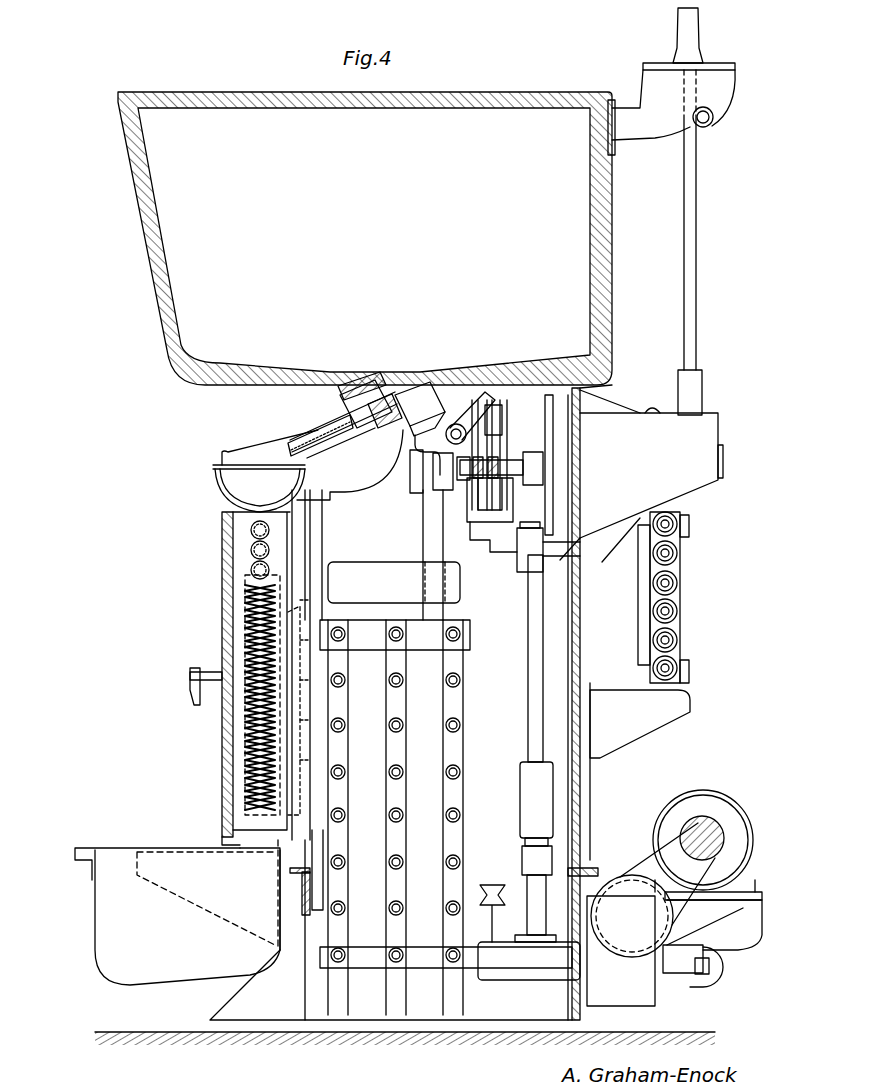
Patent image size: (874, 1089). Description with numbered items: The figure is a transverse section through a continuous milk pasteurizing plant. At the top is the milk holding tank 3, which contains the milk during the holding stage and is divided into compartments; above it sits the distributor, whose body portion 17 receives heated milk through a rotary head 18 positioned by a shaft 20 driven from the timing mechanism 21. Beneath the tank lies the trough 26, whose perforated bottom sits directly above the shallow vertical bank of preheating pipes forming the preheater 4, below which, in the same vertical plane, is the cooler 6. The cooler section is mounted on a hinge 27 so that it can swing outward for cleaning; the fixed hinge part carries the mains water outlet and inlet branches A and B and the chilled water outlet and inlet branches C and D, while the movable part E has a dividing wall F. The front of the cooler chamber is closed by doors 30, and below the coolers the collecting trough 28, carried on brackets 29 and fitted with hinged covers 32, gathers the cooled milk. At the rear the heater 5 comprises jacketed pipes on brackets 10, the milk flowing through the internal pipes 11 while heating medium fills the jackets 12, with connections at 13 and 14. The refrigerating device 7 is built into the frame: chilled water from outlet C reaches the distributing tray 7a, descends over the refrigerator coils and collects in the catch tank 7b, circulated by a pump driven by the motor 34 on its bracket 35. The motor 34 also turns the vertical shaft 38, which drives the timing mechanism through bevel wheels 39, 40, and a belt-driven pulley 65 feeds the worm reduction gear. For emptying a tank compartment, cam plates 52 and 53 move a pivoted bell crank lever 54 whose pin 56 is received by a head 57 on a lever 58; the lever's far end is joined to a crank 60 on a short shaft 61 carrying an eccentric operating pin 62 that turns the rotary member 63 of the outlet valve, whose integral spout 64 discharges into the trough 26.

The milk holding tank 3 is at (156, 246).
The preheater 4 is at (250, 572).
The heater 5 is at (682, 598).
The cooler 6 is at (250, 728).
The refrigerating device 7 is at (398, 748).
The distributing tray 7a is at (375, 568).
The catch tank 7b is at (305, 985).
The brackets 10 is at (620, 748).
The internal pipes 11 is at (678, 520).
The jackets 12 is at (652, 580).
The heating medium connection 13 is at (689, 532).
The heating medium connection 14 is at (689, 672).
The distributor body portion 17 is at (723, 95).
The rotary head 18 is at (677, 30).
The shaft 20 is at (697, 178).
The timing mechanism 21 is at (662, 422).
The trough 26 is at (214, 494).
The hinge 27 is at (300, 608).
The collecting trough 28 is at (190, 970).
The brackets 29 is at (205, 850).
The doors 30 is at (218, 620).
The hinged covers 32 is at (122, 846).
The motor 34 is at (706, 790).
The bracket 35 is at (735, 945).
The vertical shaft 38 is at (528, 708).
The bevel wheel 39 is at (530, 545).
The bevel wheel 40 is at (576, 500).
The cam plate 52 is at (500, 392).
The cam plate 53 is at (496, 498).
The bell crank lever 54 is at (508, 452).
The pin 56 is at (502, 420).
The head 57 is at (548, 395).
The lever 58 is at (476, 395).
The crank 60 is at (450, 426).
The short shaft 61 is at (413, 395).
The operating pin 62 is at (368, 380).
The rotary member 63 is at (368, 410).
The spout 64 is at (300, 438).
The pulley 65 is at (614, 876).
The outlet branch A is at (300, 690).
The inlet branch B is at (300, 720).
The outlet branch C is at (300, 782).
The inlet branch D is at (300, 800).
The movable hinge part E is at (300, 735).
The dividing wall F is at (300, 755).